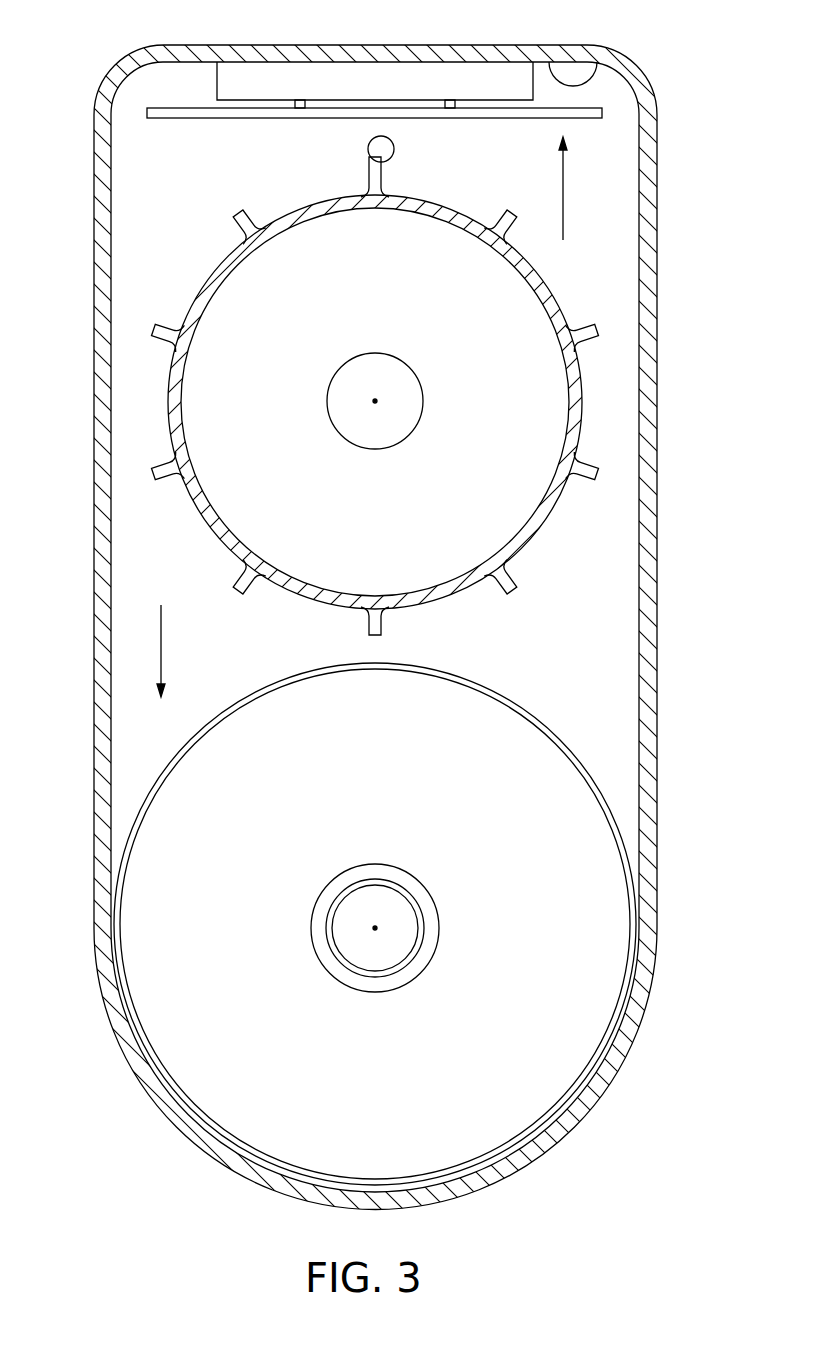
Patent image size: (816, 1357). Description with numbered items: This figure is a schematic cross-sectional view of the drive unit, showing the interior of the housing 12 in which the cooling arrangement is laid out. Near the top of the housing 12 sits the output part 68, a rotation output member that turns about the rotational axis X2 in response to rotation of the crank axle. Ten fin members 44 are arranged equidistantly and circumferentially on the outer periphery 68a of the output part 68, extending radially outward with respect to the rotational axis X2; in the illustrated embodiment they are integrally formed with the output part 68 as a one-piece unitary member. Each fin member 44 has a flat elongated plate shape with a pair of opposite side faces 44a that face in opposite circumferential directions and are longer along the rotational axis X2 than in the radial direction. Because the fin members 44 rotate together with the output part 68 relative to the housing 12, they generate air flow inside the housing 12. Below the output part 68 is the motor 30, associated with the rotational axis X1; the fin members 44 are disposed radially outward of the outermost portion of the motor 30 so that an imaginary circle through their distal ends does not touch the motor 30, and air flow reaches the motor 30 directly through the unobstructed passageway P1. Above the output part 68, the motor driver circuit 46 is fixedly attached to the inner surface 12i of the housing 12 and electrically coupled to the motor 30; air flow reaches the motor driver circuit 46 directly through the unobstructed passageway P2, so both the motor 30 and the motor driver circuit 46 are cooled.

The housing 12 is at (103, 41).
The inner surface 12i is at (583, 84).
The motor driver circuit 46 is at (596, 133).
The fin members 44 is at (399, 170).
The opposite side faces 44a is at (370, 143).
The output part 68 is at (435, 212).
The outer periphery 68a is at (458, 205).
The motor 30 is at (587, 717).
The rotational axis X1 is at (373, 931).
The rotational axis X2 is at (378, 404).
The unobstructed passageway P1 is at (175, 651).
The unobstructed passageway P2 is at (580, 188).